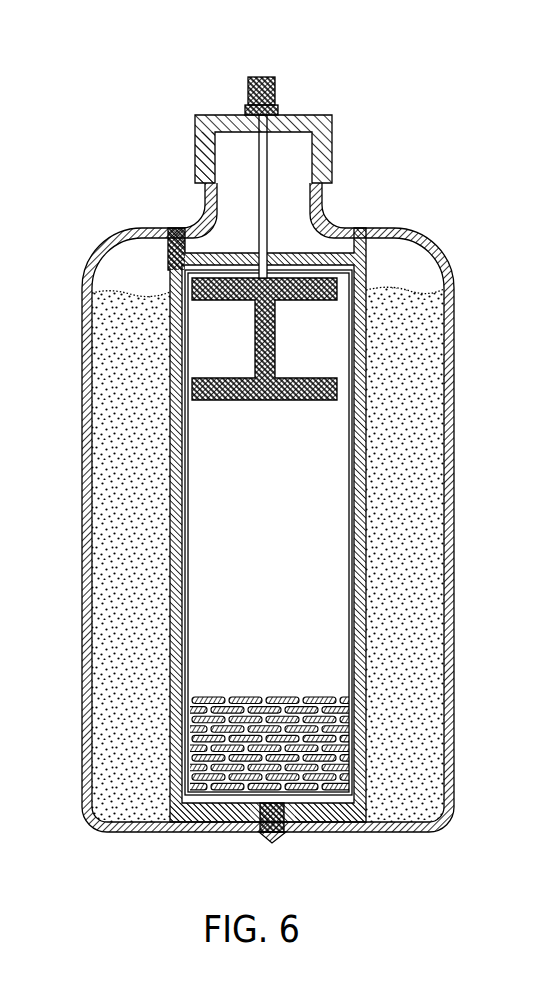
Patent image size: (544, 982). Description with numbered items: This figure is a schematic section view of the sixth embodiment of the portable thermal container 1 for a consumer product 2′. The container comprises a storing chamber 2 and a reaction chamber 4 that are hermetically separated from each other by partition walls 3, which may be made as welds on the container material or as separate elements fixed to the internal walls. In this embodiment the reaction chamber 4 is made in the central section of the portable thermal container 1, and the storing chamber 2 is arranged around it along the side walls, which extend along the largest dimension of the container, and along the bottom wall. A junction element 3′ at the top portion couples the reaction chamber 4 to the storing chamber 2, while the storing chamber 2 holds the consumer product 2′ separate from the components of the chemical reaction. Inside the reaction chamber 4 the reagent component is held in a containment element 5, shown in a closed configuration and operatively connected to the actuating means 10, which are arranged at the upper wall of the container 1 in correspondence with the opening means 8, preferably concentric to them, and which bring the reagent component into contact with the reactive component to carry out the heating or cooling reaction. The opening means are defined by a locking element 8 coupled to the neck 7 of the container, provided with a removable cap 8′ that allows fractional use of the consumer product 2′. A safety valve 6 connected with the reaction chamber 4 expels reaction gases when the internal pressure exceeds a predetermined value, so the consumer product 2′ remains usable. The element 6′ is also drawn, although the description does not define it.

The portable thermal container 1 is at (268, 453).
The storing chamber 2 is at (383, 251).
The consumer product 2′ is at (425, 326).
The partition walls 3 is at (365, 502).
The junction element 3′ is at (177, 226).
The reaction chamber 4 is at (268, 491).
The containment element 5 is at (255, 406).
The safety valve 6 is at (280, 831).
The displacement body 6′ is at (212, 365).
The neck 7 is at (200, 143).
The locking element 8 is at (333, 126).
The removable cap 8′ is at (276, 95).
The actuating means 10 is at (263, 76).